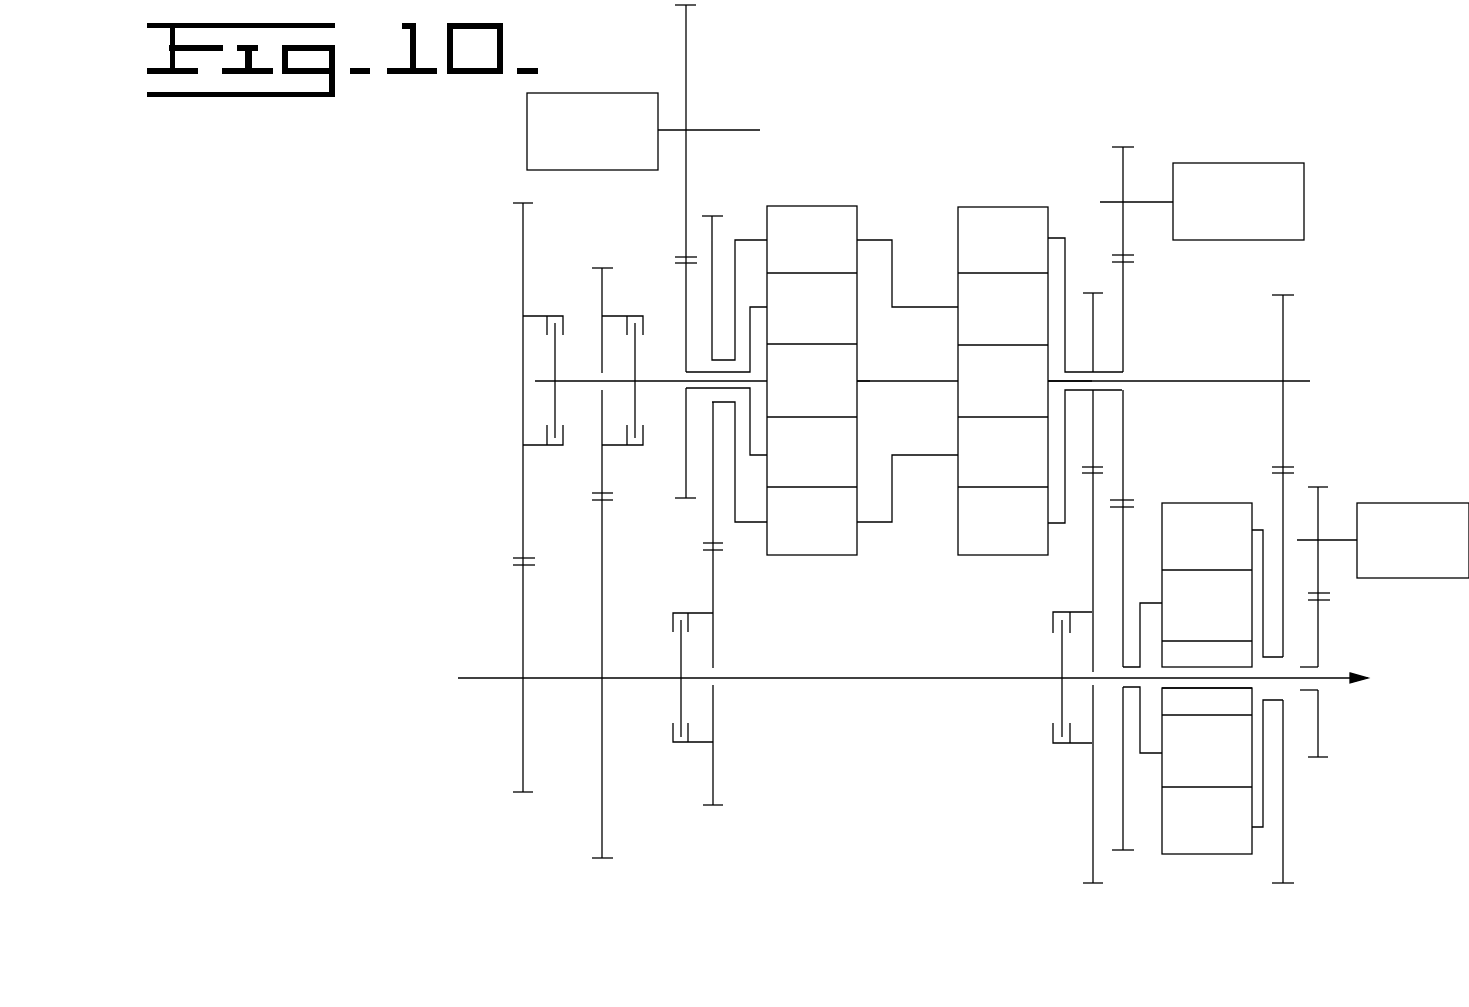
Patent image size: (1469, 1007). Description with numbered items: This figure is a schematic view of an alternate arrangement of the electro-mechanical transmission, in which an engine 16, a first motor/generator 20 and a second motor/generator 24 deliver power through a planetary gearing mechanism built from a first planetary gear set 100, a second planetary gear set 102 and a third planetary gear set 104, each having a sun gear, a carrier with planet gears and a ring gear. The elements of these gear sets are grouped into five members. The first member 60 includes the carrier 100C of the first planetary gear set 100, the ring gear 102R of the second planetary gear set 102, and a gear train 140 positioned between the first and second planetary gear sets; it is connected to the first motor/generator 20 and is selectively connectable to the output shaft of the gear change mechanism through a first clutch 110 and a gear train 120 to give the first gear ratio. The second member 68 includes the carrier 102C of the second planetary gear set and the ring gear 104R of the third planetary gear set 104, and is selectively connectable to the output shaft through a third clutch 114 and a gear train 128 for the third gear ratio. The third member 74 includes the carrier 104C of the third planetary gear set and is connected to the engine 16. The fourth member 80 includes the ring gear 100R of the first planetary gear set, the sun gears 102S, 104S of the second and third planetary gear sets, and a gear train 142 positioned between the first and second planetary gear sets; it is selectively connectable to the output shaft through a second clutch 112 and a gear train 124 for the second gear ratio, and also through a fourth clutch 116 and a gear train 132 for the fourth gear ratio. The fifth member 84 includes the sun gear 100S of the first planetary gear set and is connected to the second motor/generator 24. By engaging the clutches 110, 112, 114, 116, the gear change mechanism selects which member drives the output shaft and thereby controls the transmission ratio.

The engine 16 is at (630, 93).
The first motor/generator 20 is at (1215, 240).
The second motor/generator 24 is at (1390, 503).
The first member 60 is at (1062, 238).
The second member 68 is at (747, 240).
The third member 74 is at (763, 307).
The fourth member 80 is at (1252, 380).
The fifth member 84 is at (1300, 668).
The first planetary gear set 100 is at (1151, 832).
The carrier 100C is at (1182, 739).
The ring gear 100R is at (1247, 856).
The sun gear 100S is at (1253, 698).
The second planetary gear set 102 is at (1005, 580).
The carrier 102C is at (958, 452).
The ring gear 102R is at (958, 545).
The sun gear 102S is at (958, 373).
The third planetary gear set 104 is at (810, 582).
The carrier 104C is at (857, 428).
The ring gear 104R is at (857, 530).
The sun gear 104S is at (857, 360).
The first clutch 110 is at (1053, 745).
The second clutch 112 is at (633, 447).
The third clutch 114 is at (680, 743).
The fourth clutch 116 is at (555, 447).
The gear train 120 is at (1071, 790).
The gear train 124 is at (587, 584).
The gear train 128 is at (693, 792).
The gear train 132 is at (507, 590).
The gear train 140 is at (1140, 475).
The gear train 142 is at (1266, 446).